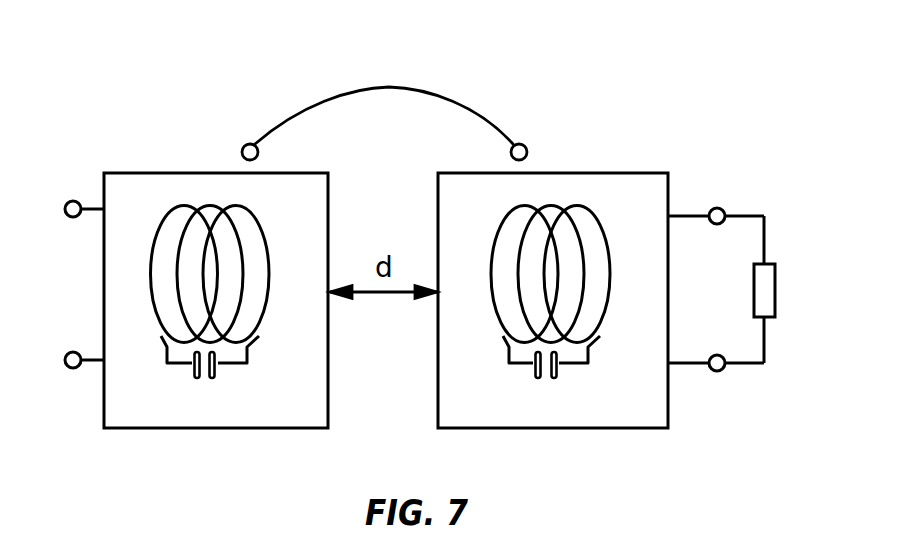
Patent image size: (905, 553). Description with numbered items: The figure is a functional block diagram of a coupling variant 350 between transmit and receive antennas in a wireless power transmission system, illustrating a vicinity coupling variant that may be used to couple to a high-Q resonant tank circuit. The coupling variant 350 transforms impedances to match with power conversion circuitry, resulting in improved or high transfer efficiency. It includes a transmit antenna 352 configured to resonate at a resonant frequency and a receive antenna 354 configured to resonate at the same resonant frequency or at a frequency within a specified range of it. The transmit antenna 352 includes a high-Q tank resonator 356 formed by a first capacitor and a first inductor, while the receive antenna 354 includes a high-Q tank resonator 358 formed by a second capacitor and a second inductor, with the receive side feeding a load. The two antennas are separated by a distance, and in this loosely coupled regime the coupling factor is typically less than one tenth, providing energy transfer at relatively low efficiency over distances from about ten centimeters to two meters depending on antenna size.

The coupling variant 350 is at (428, 44).
The transmit antenna 352 is at (196, 281).
The receive antenna 354 is at (606, 281).
The high-Q tank resonator 356 is at (256, 335).
The high-Q tank resonator 358 is at (597, 336).